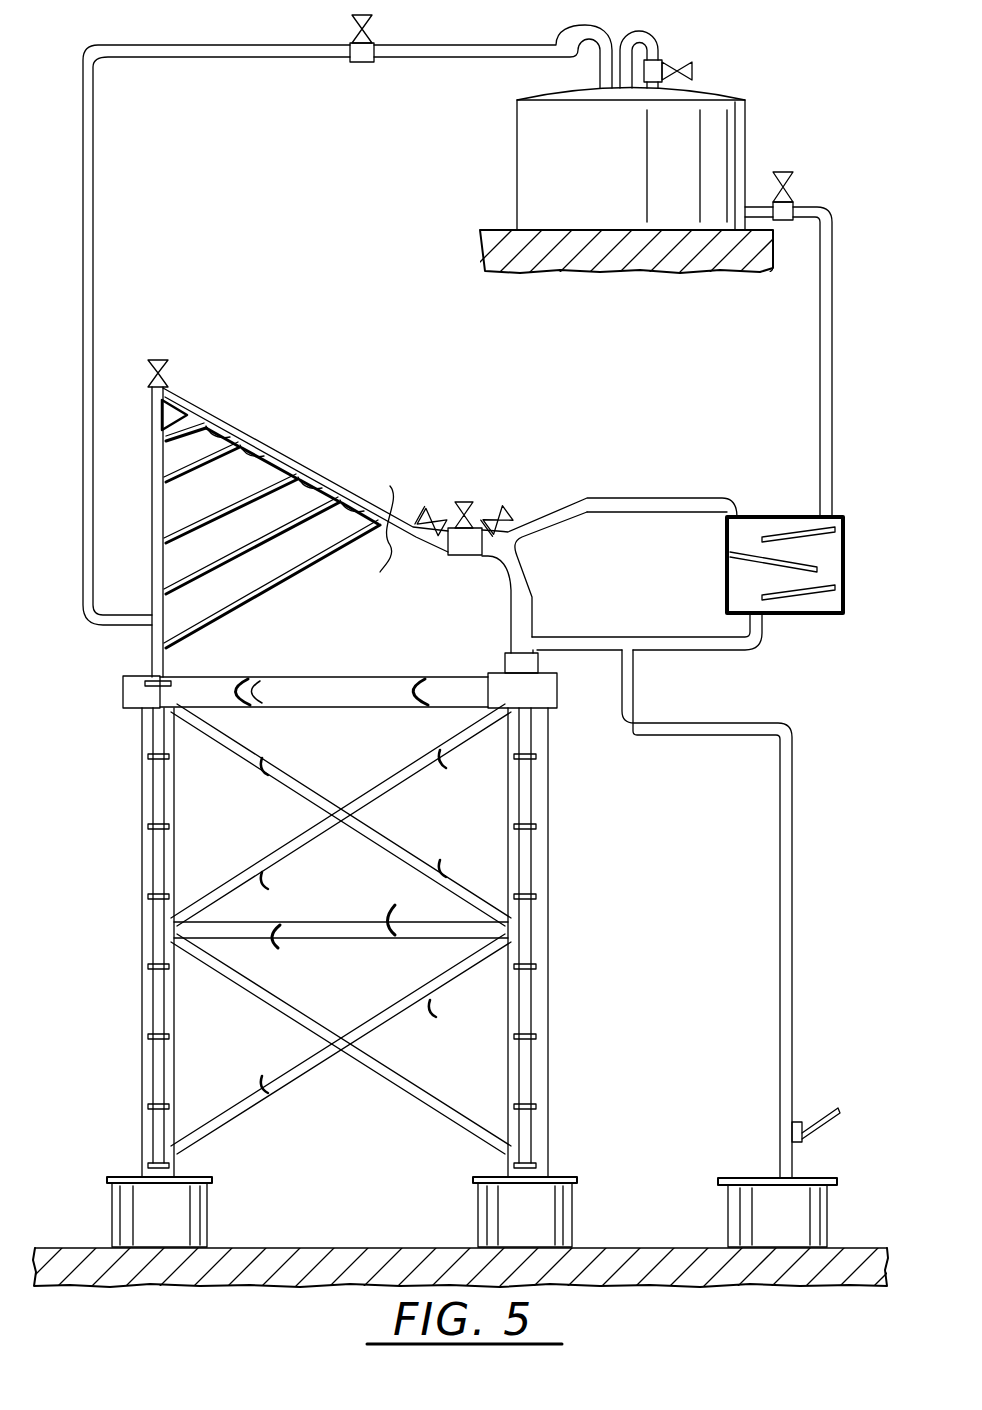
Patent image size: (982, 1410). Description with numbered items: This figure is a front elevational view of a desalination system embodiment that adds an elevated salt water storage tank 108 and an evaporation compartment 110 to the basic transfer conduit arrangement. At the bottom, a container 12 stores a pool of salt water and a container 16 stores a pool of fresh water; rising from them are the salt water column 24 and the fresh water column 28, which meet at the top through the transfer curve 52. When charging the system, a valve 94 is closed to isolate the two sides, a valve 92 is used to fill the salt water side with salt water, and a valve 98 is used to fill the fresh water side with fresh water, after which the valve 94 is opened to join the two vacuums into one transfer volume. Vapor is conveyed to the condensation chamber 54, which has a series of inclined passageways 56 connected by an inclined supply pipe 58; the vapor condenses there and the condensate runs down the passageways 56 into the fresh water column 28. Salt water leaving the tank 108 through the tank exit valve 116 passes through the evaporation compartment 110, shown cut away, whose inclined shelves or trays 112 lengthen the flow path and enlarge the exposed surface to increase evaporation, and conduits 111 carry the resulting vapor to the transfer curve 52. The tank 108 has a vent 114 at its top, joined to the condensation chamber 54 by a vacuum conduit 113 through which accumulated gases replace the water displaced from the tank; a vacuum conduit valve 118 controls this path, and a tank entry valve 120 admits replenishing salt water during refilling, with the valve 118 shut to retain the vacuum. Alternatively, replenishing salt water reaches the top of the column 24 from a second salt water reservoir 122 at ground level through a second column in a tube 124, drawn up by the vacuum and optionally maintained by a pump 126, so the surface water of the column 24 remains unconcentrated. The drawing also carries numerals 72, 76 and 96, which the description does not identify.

The container 12 is at (577, 1210).
The container 16 is at (210, 1210).
The salt water column 24 is at (527, 876).
The fresh water column 28 is at (155, 855).
The transfer curve 52 is at (523, 577).
The condensation chamber 54 is at (147, 513).
The inclined passageways 56 is at (222, 440).
The inclined supply pipe 58 is at (283, 457).
The manifold 72 is at (378, 676).
The cross braces 76 is at (405, 840).
The valve 92 is at (505, 508).
The valve 94 is at (466, 500).
The valve 96 is at (163, 372).
The valve 98 is at (436, 508).
The elevated salt water storage tank 108 is at (745, 135).
The evaporation compartment 110 is at (770, 516).
The conduits 111 is at (657, 498).
The shelves or trays 112 is at (815, 553).
The vacuum conduit 113 is at (93, 262).
The vent 114 is at (578, 62).
The tank exit valve 116 is at (786, 172).
The vacuum conduit valve 118 is at (360, 63).
The tank entry valve 120 is at (692, 71).
The second salt water reservoir 122 is at (829, 1207).
The tube 124 is at (792, 880).
The pump 126 is at (822, 1108).